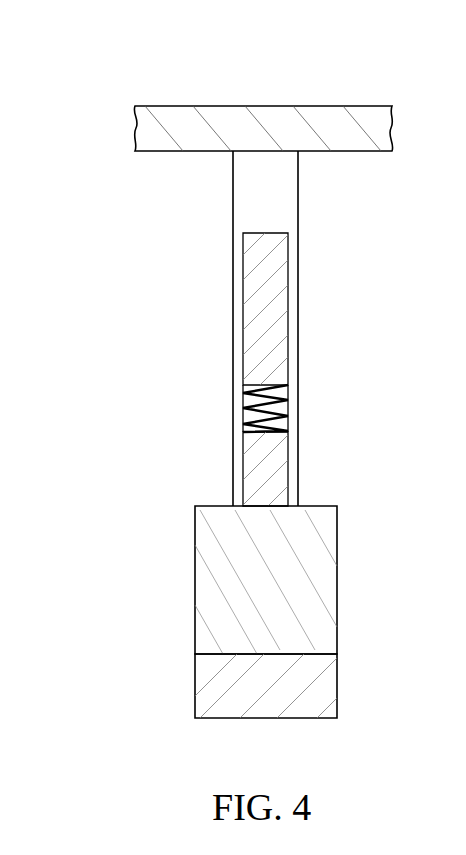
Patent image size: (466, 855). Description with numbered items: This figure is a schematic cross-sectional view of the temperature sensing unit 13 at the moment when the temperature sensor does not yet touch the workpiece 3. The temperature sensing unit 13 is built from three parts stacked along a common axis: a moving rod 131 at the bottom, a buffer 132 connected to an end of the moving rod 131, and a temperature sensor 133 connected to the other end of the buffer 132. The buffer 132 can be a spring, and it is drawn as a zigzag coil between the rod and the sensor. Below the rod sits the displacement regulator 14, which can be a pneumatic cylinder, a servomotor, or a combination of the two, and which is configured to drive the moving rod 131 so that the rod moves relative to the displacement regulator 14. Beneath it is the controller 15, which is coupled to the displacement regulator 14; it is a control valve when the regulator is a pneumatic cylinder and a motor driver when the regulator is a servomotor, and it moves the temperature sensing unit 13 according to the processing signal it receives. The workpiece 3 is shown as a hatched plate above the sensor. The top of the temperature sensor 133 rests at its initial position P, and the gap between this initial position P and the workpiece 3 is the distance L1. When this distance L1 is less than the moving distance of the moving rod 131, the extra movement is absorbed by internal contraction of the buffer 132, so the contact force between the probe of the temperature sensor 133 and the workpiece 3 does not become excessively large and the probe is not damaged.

The workpiece 3 is at (247, 125).
The temperature sensing unit 13 is at (158, 328).
The moving rod 131 is at (258, 462).
The buffer 132 is at (243, 418).
The temperature sensor 133 is at (252, 355).
The displacement regulator 14 is at (208, 597).
The controller 15 is at (208, 685).
The initial position P is at (252, 233).
The distance L1 is at (315, 152).